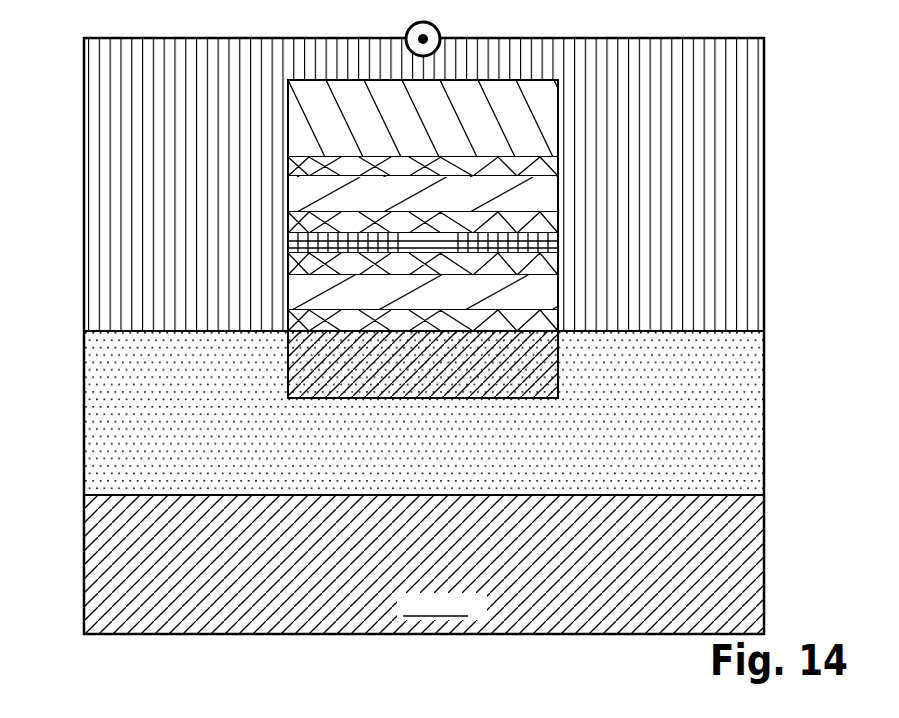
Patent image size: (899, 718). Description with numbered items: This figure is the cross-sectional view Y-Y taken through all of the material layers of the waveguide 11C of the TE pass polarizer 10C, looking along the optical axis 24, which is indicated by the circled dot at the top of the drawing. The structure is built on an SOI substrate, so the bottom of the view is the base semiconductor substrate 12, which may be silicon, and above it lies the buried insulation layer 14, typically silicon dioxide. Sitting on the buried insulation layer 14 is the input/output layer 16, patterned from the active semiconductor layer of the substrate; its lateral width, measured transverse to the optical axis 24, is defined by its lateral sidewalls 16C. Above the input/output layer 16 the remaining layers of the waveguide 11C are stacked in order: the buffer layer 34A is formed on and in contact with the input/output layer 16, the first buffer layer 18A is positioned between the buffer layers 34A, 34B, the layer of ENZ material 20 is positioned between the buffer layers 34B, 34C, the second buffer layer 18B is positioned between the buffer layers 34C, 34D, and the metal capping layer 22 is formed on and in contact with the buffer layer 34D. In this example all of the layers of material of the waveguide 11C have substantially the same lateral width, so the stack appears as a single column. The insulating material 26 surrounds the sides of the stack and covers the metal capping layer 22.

The TE pass polarizer 10C is at (49, 84).
The waveguide 11C is at (591, 118).
The base semiconductor substrate 12 is at (439, 558).
The buried insulation layer 14 is at (439, 461).
The input/output layer 16 is at (446, 368).
The lateral sidewalls 16C is at (289, 346).
The first buffer layer 18A is at (438, 301).
The second buffer layer 18B is at (438, 203).
The layer of ENZ material 20 is at (437, 253).
The metal capping layer 22 is at (439, 126).
The optical axis 24 is at (450, 30).
The insulating material 26 is at (208, 151).
The buffer layer 34A is at (436, 330).
The buffer layer 34B is at (436, 274).
The buffer layer 34C is at (436, 233).
The buffer layer 34D is at (436, 178).